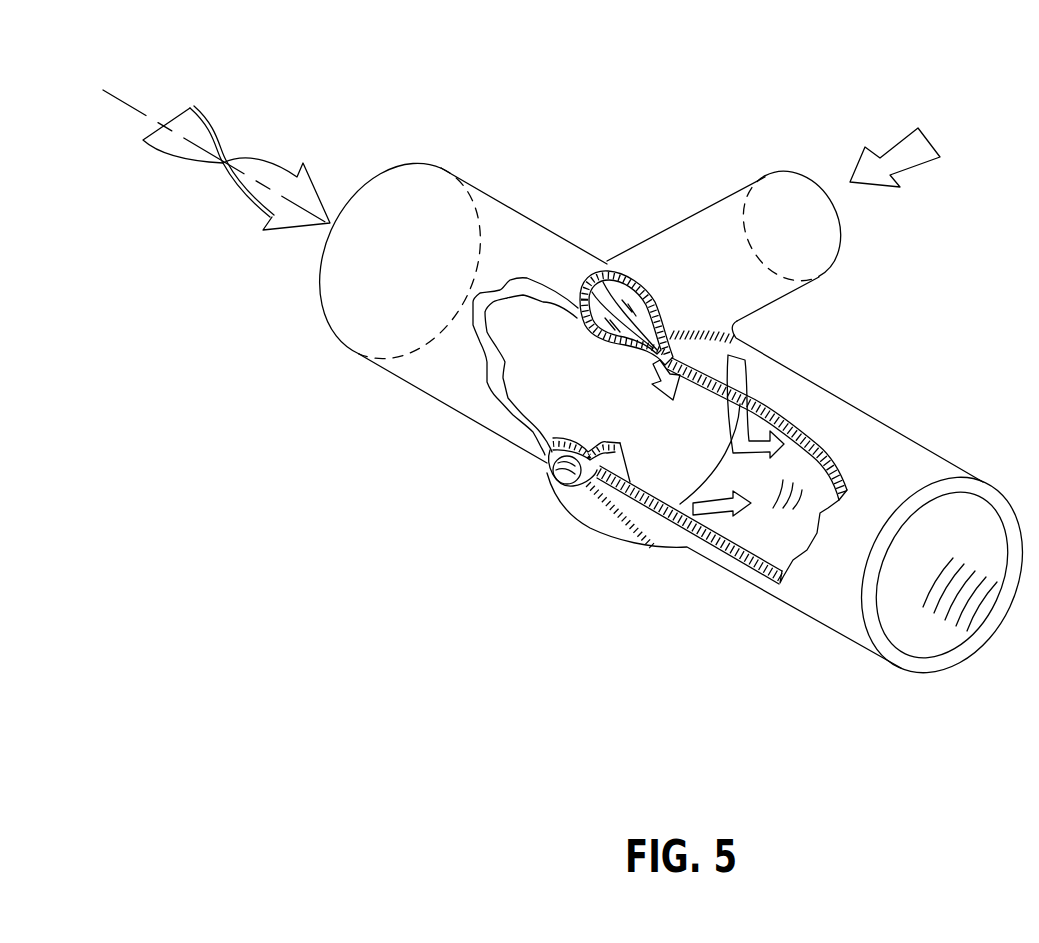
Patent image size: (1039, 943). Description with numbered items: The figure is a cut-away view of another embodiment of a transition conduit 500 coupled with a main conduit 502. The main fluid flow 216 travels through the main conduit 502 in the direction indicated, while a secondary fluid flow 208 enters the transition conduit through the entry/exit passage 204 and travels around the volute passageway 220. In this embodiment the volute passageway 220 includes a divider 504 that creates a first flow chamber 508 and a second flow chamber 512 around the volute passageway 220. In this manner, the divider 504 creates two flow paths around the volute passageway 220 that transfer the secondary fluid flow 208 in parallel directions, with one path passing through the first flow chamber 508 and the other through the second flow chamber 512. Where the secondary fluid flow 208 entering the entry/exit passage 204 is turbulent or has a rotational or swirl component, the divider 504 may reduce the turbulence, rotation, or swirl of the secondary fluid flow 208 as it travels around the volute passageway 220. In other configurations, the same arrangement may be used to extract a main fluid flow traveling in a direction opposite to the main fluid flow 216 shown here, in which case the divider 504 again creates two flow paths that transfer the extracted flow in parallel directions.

The transition conduit 500 is at (600, 100).
The main conduit 502 is at (481, 189).
The entry/exit passage 204 is at (730, 196).
The volute passageway 220 is at (645, 272).
The divider 504 is at (603, 270).
The second flow chamber 512 is at (637, 303).
The first flow chamber 508 is at (600, 307).
The main fluid flow 216 is at (200, 108).
The secondary fluid flow 208 is at (897, 140).